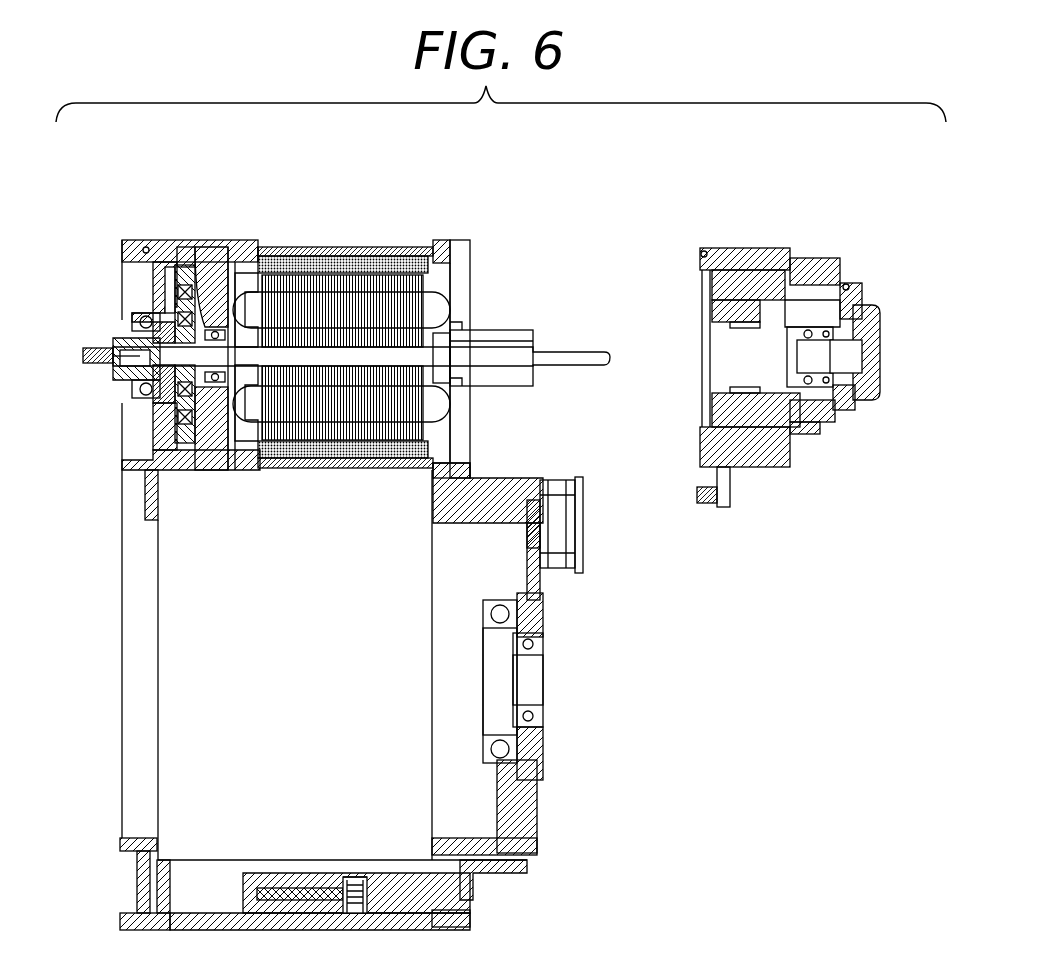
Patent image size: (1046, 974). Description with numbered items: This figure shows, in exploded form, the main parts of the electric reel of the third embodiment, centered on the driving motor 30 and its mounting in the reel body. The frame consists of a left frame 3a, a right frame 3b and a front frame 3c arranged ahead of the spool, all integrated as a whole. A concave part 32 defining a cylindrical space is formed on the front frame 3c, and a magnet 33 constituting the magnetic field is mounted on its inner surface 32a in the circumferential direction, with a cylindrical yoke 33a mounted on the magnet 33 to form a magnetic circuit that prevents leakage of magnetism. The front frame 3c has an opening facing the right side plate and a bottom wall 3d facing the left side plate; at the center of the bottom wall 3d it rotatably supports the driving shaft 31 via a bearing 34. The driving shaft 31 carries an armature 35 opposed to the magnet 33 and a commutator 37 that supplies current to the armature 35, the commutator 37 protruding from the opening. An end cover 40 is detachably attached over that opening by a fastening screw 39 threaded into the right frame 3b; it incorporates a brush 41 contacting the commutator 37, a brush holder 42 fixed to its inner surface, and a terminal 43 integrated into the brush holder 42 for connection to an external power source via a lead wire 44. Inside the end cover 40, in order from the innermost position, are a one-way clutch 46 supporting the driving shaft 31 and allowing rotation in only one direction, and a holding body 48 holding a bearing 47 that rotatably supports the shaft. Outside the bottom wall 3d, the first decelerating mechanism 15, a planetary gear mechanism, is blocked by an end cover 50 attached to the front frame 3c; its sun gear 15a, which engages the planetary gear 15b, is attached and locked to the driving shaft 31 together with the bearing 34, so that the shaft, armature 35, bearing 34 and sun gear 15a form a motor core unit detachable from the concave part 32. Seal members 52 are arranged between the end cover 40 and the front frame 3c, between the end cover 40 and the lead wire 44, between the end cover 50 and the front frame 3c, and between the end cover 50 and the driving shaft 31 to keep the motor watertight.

The left frame 3a is at (126, 840).
The right frame 3b is at (530, 838).
The front frame 3c is at (127, 241).
The bottom wall 3d is at (210, 300).
The first decelerating mechanism 15 is at (172, 433).
The sun gear 15a is at (132, 394).
The planetary gear 15b is at (162, 400).
The driving motor 30 is at (433, 246).
The driving shaft 31 is at (583, 350).
The concave part 32 is at (253, 258).
The inner surface 32a is at (268, 470).
The magnet 33 is at (318, 247).
The cylindrical yoke 33a is at (381, 257).
The bearing 34 is at (203, 257).
The armature 35 is at (415, 288).
The commutator 37 is at (504, 384).
The fastening screw 39 is at (703, 505).
The end cover 40 is at (745, 262).
The brush 41 is at (750, 395).
The brush holder 42 is at (768, 266).
The terminal 43 is at (806, 312).
The lead wire 44 is at (860, 304).
The one-way clutch 46 is at (813, 384).
The bearing 47 is at (866, 396).
The holding body 48 is at (880, 352).
The end cover 50 is at (158, 280).
The seal member 52 is at (148, 248).